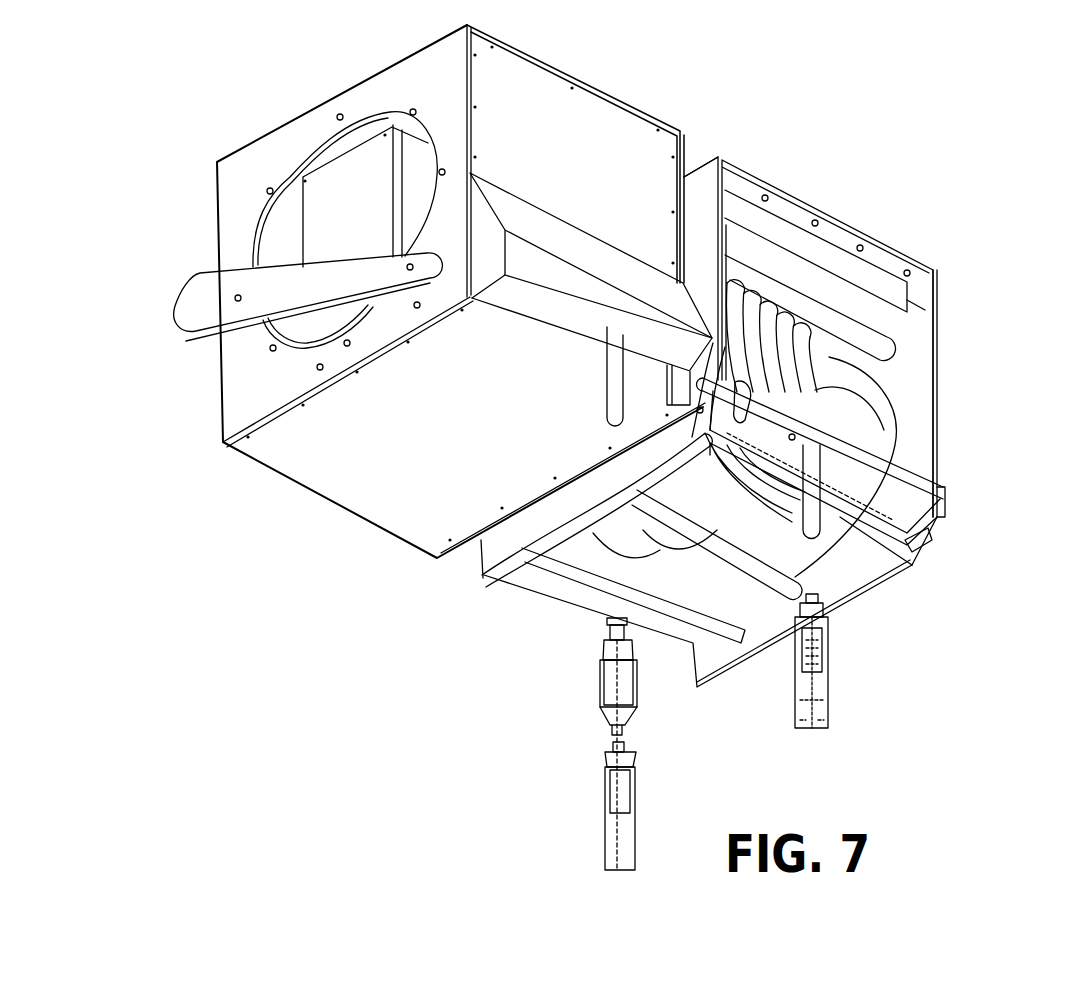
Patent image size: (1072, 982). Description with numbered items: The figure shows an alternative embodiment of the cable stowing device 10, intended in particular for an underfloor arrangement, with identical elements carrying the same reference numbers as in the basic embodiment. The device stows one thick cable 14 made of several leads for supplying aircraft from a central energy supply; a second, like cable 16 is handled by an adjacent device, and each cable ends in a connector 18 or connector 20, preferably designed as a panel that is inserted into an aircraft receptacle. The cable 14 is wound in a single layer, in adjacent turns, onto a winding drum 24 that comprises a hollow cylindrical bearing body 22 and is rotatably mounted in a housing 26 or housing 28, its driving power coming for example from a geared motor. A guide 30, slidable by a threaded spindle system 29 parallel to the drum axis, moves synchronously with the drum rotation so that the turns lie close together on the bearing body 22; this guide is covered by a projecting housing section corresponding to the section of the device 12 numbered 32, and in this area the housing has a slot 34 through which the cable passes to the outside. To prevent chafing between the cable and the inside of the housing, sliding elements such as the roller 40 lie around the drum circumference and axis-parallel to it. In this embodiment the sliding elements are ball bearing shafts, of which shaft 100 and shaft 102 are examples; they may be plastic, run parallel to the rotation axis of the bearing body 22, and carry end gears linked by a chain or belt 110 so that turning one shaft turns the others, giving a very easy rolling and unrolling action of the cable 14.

The stowing device 10 is at (852, 186).
The device 12 is at (232, 587).
The cable 14 is at (808, 390).
The cable 16 is at (613, 360).
The connector 18 is at (828, 680).
The connector 20 is at (578, 775).
The bearing body 22 is at (863, 413).
The winding drum 24 is at (972, 322).
The housing 26 is at (913, 320).
The housing 28 is at (397, 88).
The threaded spindle system 29 is at (945, 493).
The guide 30 is at (927, 537).
The projecting housing section 32 is at (552, 270).
The slot 34 is at (512, 303).
The sliding element 40 is at (650, 577).
The ball bearing shaft 100 is at (760, 577).
The ball bearing shaft 102 is at (845, 323).
The chain or belt 110 is at (840, 517).